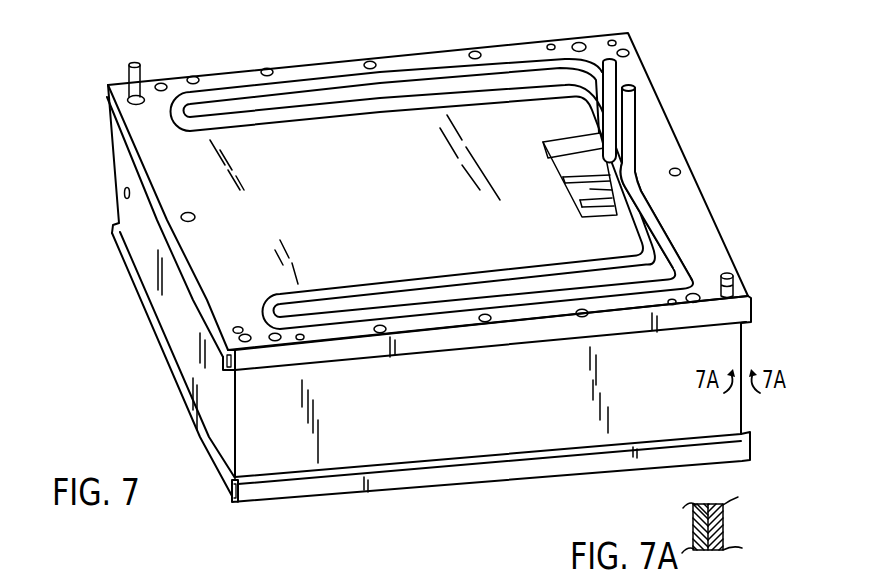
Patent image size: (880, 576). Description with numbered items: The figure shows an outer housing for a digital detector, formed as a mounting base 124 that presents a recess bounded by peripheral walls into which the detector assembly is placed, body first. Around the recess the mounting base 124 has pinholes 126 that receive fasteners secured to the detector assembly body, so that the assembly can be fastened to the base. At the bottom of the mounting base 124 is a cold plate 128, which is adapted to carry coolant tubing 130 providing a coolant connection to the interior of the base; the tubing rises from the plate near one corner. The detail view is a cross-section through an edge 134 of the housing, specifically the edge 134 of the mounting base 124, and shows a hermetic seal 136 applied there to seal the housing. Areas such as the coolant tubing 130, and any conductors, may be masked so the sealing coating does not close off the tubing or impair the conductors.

In FIG. 7, the mounting base 124 is at (77, 66).
In FIG. 7, the pinholes 126 is at (470, 52).
In FIG. 7, the cold plate 128 is at (396, 206).
In FIG. 7, the coolant tubing 130 is at (628, 84).
In FIG. 7A, the edge 134 is at (693, 524).
In FIG. 7A, the hermetic seal 136 is at (723, 526).